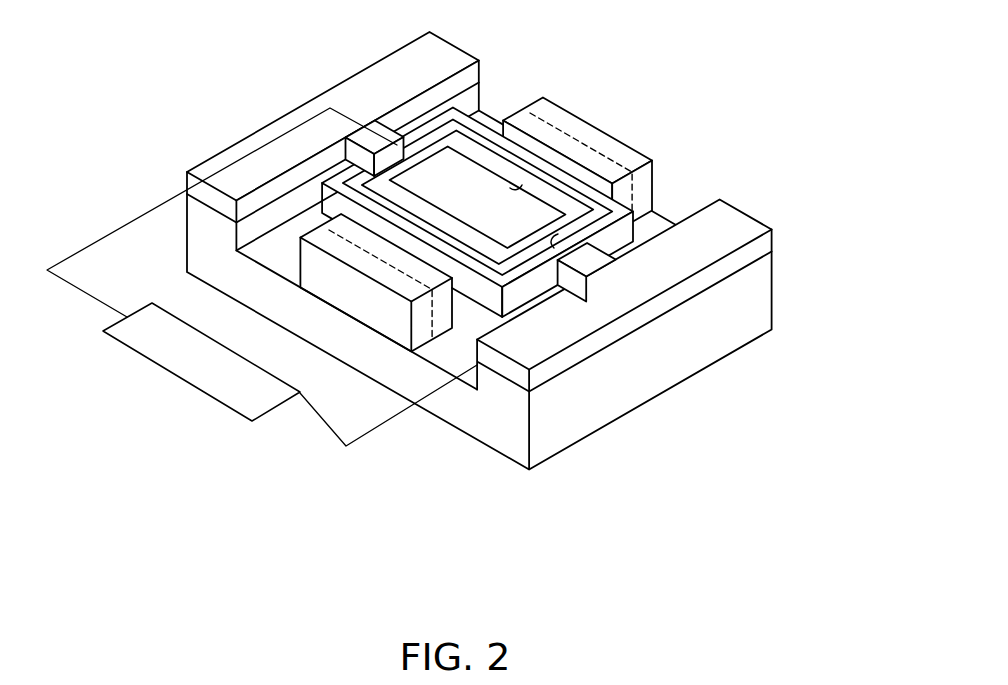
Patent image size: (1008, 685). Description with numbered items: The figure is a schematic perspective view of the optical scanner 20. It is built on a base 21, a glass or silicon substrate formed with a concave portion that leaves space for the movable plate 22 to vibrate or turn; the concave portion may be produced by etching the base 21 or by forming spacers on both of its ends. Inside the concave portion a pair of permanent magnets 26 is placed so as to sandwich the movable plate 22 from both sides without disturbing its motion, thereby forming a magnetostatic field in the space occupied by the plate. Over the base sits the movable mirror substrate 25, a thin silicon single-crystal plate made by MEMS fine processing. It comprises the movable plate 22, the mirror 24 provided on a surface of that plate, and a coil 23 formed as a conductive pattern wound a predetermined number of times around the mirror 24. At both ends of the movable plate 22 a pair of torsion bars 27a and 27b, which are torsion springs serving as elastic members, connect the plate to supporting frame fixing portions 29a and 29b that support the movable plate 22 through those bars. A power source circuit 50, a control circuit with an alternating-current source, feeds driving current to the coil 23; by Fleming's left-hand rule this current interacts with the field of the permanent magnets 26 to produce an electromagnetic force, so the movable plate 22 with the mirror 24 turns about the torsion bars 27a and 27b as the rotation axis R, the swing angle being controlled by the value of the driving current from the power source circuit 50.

The optical scanner 20 is at (525, 286).
The base 21 is at (778, 301).
The movable plate 22 is at (489, 169).
The coil 23 is at (551, 165).
The mirror 24 is at (522, 183).
The movable mirror substrate 25 is at (521, 196).
The permanent magnets 26 is at (318, 215).
The torsion bar 27a is at (378, 132).
The torsion bar 27b is at (602, 258).
The supporting frame fixing portion 29a is at (348, 98).
The supporting frame fixing portion 29b is at (745, 214).
The power source circuit 50 is at (180, 376).
The rotation axis R is at (300, 97).